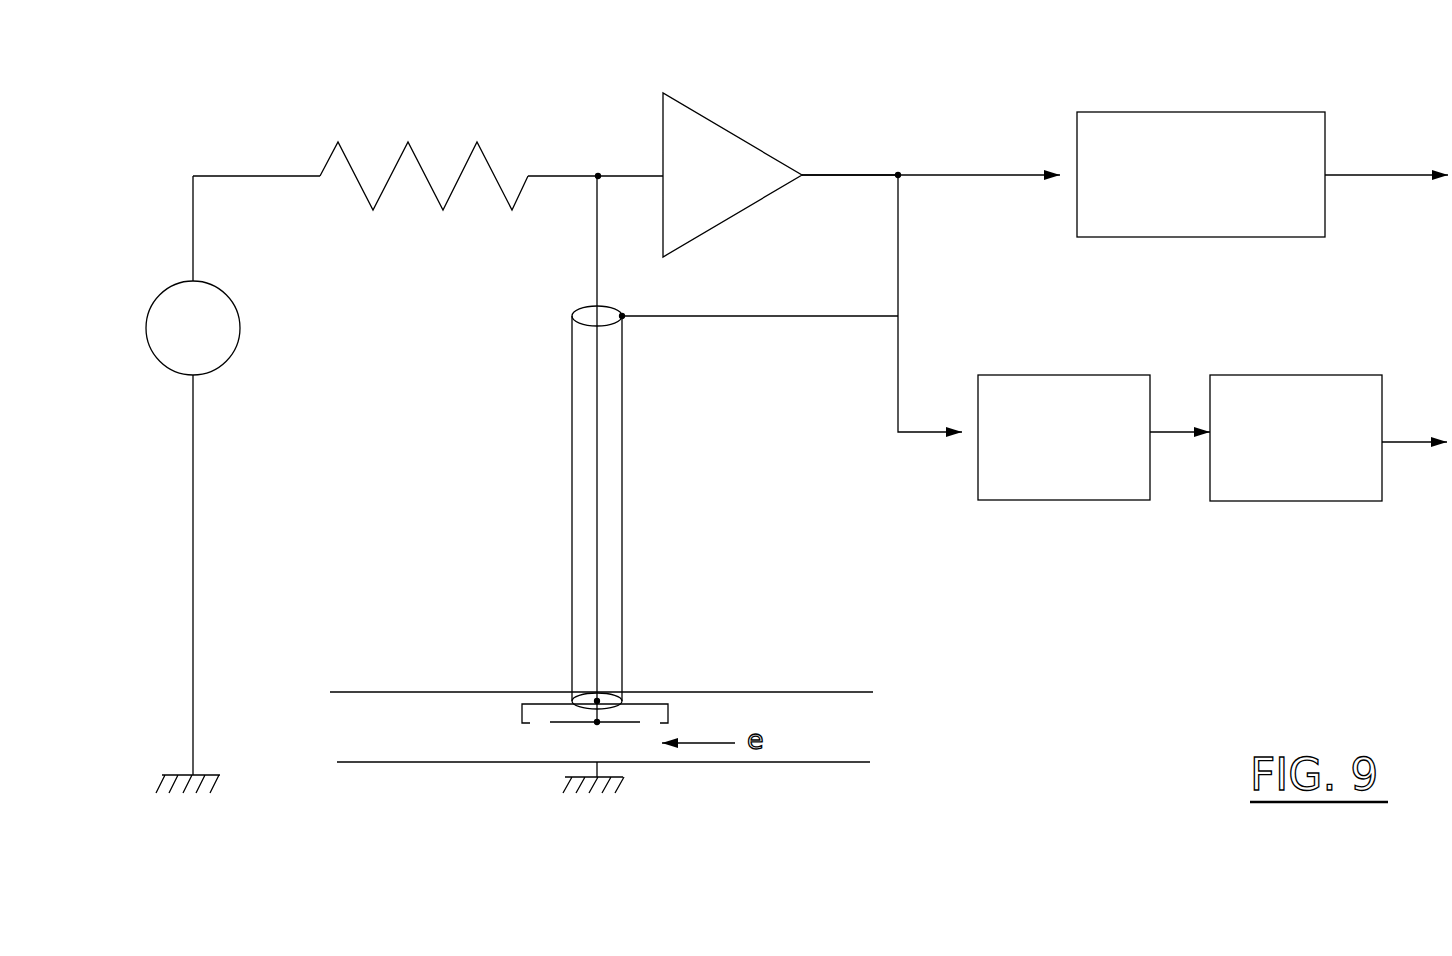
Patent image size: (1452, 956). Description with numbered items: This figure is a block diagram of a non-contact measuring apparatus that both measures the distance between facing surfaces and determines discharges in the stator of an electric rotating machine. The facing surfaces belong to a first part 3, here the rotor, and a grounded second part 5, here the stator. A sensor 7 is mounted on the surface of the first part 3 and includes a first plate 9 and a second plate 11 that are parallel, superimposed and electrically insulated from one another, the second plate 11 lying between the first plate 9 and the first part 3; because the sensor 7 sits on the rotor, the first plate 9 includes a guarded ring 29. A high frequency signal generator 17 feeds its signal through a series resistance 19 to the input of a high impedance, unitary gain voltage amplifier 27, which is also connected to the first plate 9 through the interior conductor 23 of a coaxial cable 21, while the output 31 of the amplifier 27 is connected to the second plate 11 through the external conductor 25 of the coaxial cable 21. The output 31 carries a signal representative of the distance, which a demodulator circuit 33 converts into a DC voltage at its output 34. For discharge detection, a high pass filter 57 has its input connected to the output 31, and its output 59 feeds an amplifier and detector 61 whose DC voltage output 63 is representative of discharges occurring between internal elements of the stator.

The first part 3 is at (440, 692).
The second part 5 is at (437, 762).
The sensor 7 is at (688, 713).
The first plate 9 is at (557, 723).
The second plate 11 is at (545, 702).
The high frequency signal generator 17 is at (240, 340).
The resistance 19 is at (368, 220).
The coaxial cable 21 is at (608, 515).
The interior conductor 23 is at (597, 517).
The external conductor 25 is at (622, 408).
The voltage amplifier 27 is at (722, 191).
The guarded ring 29 is at (540, 722).
The output of the amplifier 31 is at (852, 175).
The demodulator circuit 33 is at (1246, 190).
The output of the demodulator circuit 34 is at (1380, 175).
The high pass filter 57 is at (1080, 452).
The output of the high pass filter 59 is at (1177, 432).
The amplifier and detector 61 is at (1318, 452).
The output line 63 is at (1407, 442).